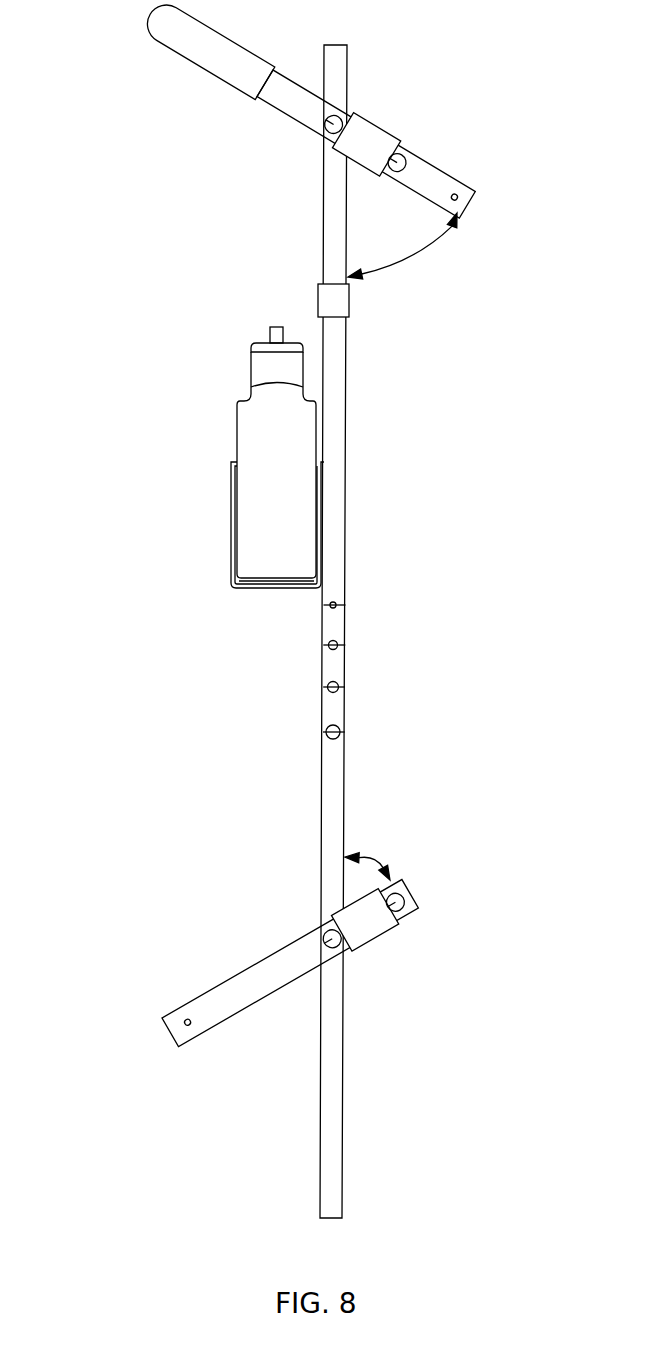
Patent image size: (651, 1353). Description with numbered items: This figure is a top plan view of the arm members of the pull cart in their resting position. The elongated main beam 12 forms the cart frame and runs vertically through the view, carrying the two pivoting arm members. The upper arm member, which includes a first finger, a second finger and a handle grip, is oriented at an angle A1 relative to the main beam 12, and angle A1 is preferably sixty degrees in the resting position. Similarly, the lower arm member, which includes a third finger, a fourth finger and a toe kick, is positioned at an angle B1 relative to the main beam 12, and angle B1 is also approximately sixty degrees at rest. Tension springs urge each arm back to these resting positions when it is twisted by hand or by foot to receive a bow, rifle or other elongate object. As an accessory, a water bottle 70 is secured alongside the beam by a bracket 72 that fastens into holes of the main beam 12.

The main beam 12 is at (333, 555).
The water bottle 70 is at (272, 493).
The bracket 72 is at (257, 588).
The angle A1 is at (423, 255).
The angle B1 is at (377, 858).